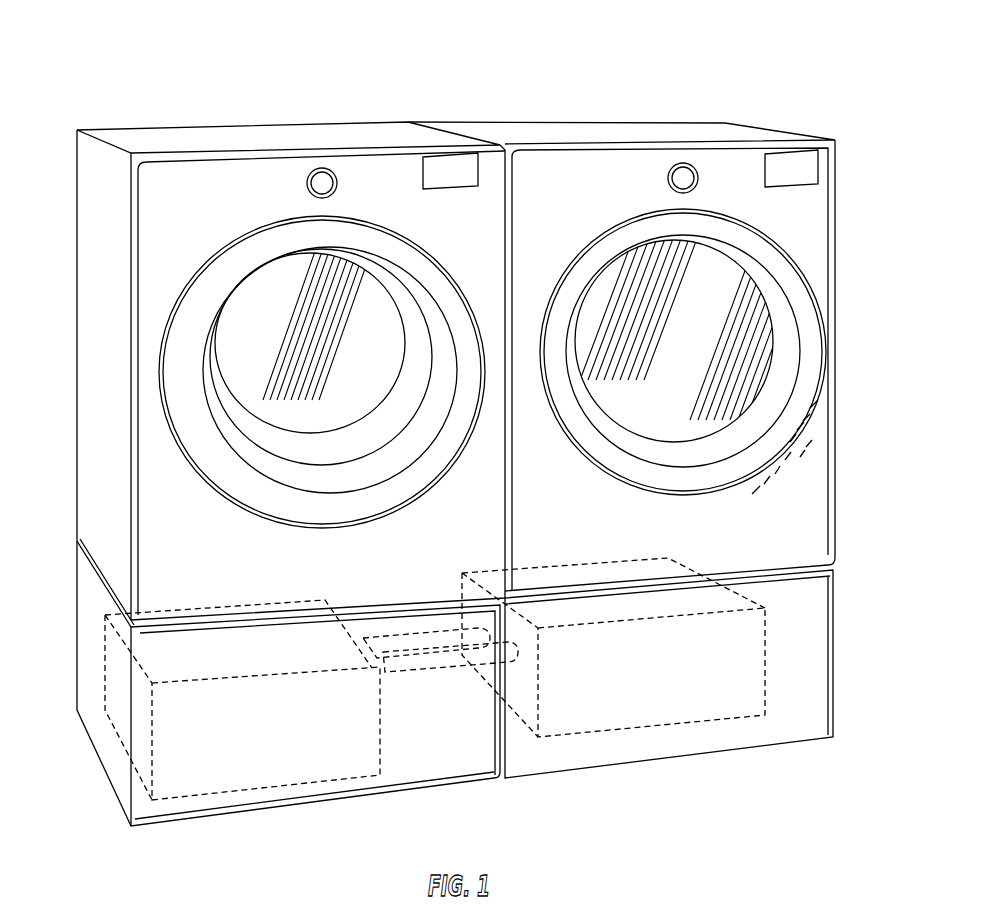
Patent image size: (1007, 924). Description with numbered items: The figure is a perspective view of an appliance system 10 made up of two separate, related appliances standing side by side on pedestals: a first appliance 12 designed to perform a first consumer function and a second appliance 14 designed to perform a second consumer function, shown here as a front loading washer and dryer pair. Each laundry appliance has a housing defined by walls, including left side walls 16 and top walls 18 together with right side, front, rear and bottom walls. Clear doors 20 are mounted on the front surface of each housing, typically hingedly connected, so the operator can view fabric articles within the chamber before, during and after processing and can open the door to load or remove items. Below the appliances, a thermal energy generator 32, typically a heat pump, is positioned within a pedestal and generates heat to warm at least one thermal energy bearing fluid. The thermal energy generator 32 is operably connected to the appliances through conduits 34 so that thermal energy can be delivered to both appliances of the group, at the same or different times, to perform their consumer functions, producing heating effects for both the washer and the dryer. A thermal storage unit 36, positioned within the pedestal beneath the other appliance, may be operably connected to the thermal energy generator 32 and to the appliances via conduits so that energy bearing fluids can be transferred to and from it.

The appliance system 10 is at (522, 74).
The first appliance 12 is at (848, 190).
The second appliance 14 is at (72, 287).
The left side wall 16 is at (103, 415).
The top wall 18 is at (290, 136).
The clear door 20 is at (357, 365).
The thermal energy generator 32 is at (310, 739).
The conduit 34 is at (372, 645).
The thermal storage unit 36 is at (702, 689).